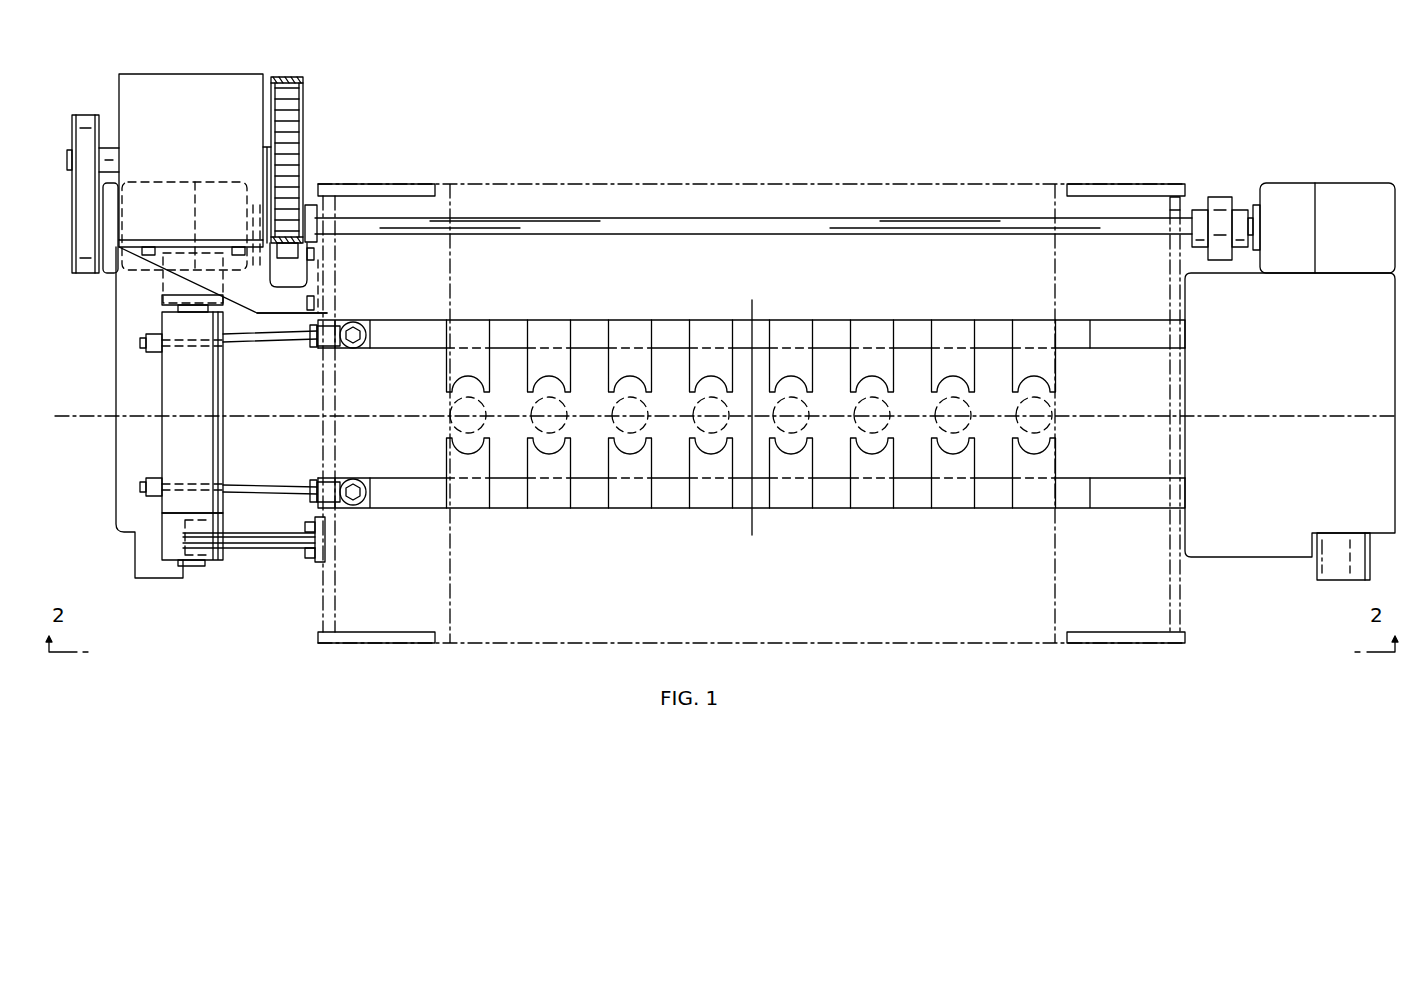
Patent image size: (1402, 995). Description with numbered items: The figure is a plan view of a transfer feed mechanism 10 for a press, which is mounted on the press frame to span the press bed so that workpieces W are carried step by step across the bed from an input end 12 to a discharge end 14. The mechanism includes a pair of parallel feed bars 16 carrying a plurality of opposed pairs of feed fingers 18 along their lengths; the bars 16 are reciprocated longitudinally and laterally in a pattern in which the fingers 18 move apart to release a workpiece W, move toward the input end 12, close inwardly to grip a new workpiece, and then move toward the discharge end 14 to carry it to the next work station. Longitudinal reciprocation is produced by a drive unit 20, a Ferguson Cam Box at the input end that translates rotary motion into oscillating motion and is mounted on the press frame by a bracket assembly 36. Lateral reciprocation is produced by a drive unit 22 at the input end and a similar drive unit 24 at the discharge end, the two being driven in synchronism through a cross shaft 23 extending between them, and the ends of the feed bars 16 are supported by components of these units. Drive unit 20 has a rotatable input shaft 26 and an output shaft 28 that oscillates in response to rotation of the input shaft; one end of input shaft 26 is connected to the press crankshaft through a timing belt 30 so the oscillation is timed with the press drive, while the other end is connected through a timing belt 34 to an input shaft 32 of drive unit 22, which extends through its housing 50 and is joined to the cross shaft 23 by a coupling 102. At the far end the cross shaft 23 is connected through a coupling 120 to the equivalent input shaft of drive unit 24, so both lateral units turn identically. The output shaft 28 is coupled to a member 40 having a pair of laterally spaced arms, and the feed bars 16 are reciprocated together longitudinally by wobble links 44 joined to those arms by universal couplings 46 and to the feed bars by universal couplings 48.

The transfer feed mechanism 10 is at (918, 143).
The input end 12 is at (362, 312).
The discharge end 14 is at (1248, 350).
The feed bars 16 is at (680, 325).
The feed fingers 18 is at (606, 373).
The workpieces W is at (530, 402).
The drive unit 20 is at (215, 74).
The drive unit 22 is at (115, 510).
The cross shaft 23 is at (755, 222).
The drive unit 24 is at (1272, 562).
The input shaft 26 is at (265, 160).
The output shaft 28 is at (191, 242).
The timing belt 30 is at (290, 77).
The input shaft 32 is at (103, 222).
The timing belt 34 is at (85, 122).
The bracket assembly 36 is at (253, 315).
The member 40 is at (218, 452).
The wobble links 44 is at (285, 345).
The universal couplings 46 is at (142, 355).
The universal couplings 48 is at (358, 347).
The housing 50 is at (116, 345).
The coupling 102 is at (308, 205).
The coupling 120 is at (1220, 197).